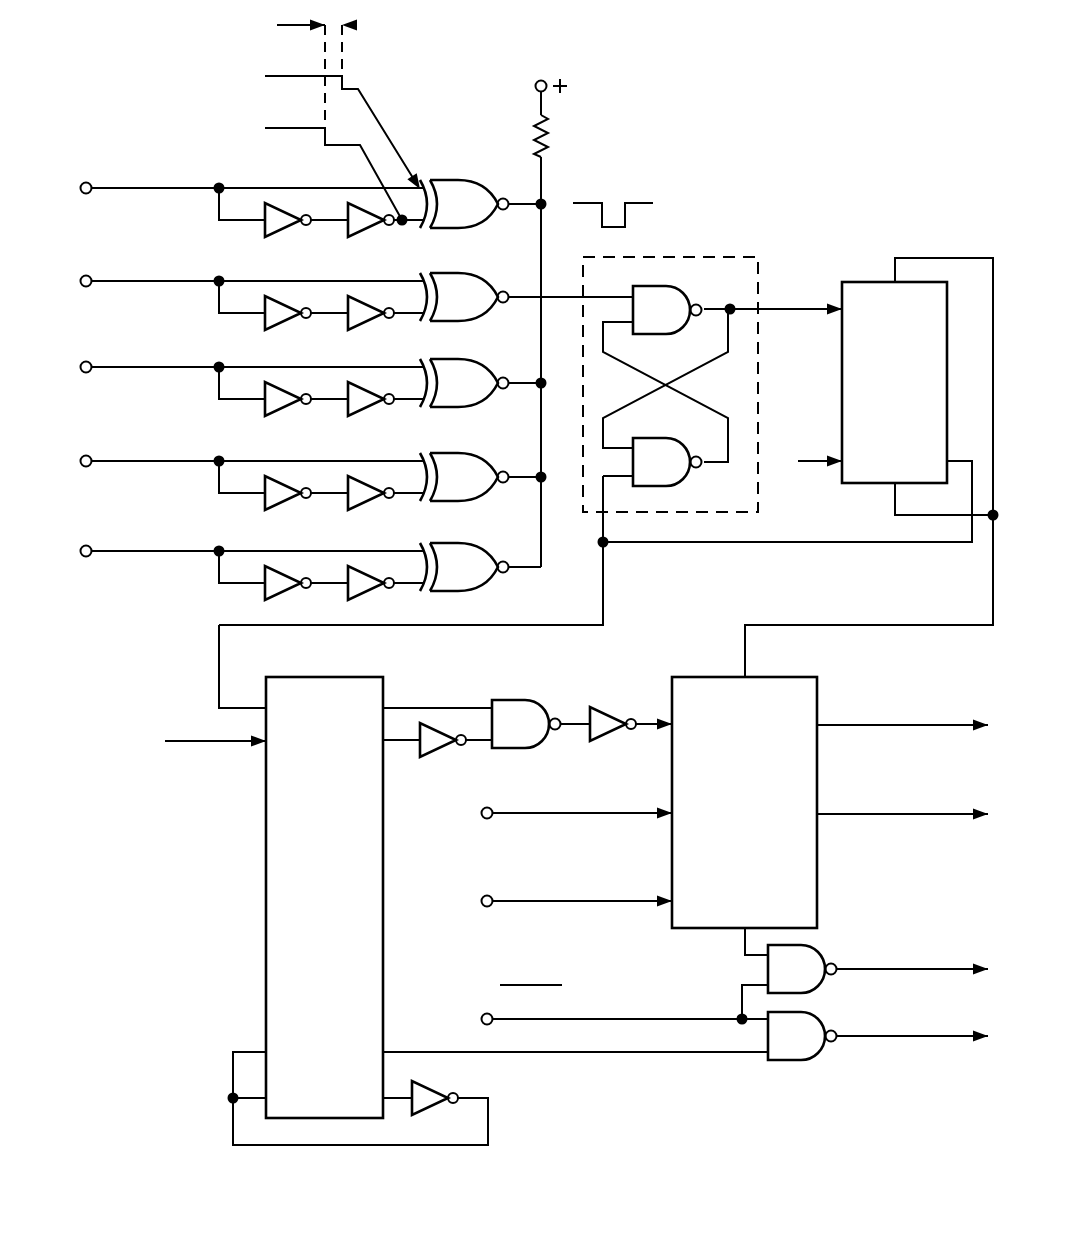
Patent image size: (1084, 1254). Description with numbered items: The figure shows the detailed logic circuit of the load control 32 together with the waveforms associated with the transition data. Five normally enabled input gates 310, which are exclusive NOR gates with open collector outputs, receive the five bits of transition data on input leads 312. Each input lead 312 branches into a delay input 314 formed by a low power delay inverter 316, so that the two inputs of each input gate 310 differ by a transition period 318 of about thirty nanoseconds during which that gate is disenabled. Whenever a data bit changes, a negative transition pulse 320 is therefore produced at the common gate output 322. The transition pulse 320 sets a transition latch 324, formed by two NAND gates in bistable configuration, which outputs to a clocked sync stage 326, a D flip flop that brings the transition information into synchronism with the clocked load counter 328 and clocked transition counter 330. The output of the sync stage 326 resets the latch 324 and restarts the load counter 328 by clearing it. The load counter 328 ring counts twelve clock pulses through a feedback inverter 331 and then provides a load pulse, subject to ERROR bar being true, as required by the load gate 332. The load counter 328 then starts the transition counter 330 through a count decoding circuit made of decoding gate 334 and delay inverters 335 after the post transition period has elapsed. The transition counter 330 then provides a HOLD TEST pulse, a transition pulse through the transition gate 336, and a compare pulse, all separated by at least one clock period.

The load control 32 is at (539, 697).
The input gate 310 is at (483, 188).
The input lead 312 is at (253, 189).
The delay input 314 is at (248, 224).
The delay inverter 316 is at (346, 226).
The transition period 318 is at (345, 25).
The transition pulse 320 is at (613, 205).
The common gate output 322 is at (541, 268).
The transition latch 324 is at (676, 257).
The sync stage 326 is at (894, 382).
The load counter 328 is at (324, 897).
The transition counter 330 is at (744, 802).
The feedback inverter 331 is at (436, 1091).
The load gate 332 is at (802, 1036).
The decoding gate 334 is at (526, 724).
The delay inverter 335 is at (619, 716).
The transition gate 336 is at (802, 969).